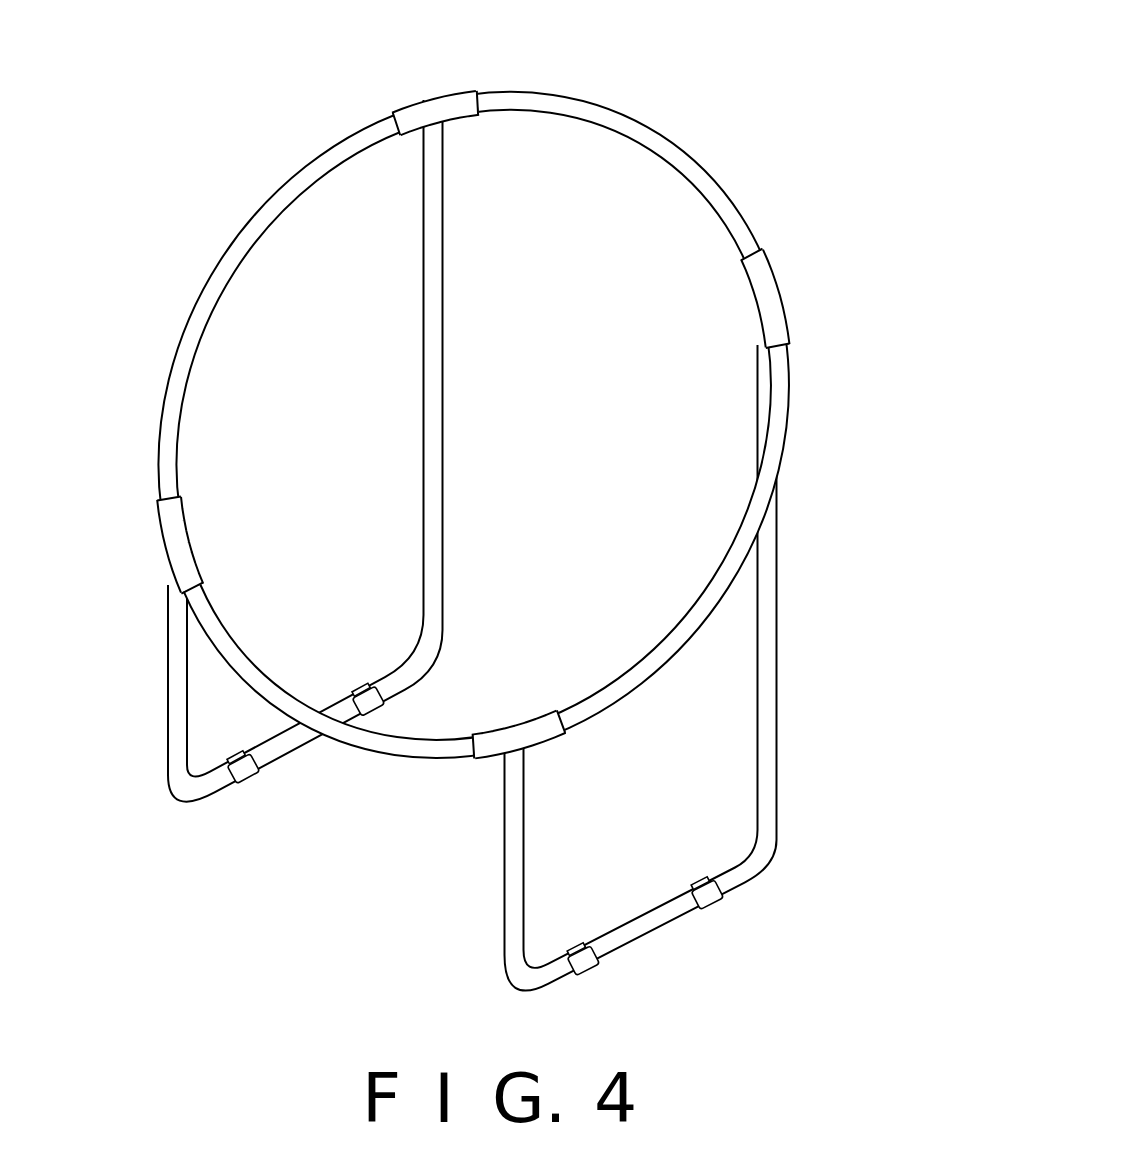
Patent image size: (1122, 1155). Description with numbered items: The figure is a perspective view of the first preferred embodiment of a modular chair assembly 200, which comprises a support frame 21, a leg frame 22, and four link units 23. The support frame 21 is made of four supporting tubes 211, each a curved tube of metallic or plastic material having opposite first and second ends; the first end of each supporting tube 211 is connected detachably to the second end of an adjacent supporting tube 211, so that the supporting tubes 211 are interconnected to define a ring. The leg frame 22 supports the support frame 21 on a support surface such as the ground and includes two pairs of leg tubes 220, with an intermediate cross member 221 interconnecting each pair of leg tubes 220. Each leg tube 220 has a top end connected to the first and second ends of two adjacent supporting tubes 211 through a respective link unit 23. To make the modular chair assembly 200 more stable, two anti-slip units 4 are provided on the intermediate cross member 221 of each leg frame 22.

The modular chair assembly 200 is at (479, 507).
The support frame 21 is at (476, 433).
The supporting tube 211 is at (700, 597).
The leg frame 22 is at (515, 557).
The leg tube 220 is at (508, 800).
The intermediate cross member 221 is at (472, 814).
The link unit 23 is at (780, 303).
The anti-slip unit 4 is at (693, 875).